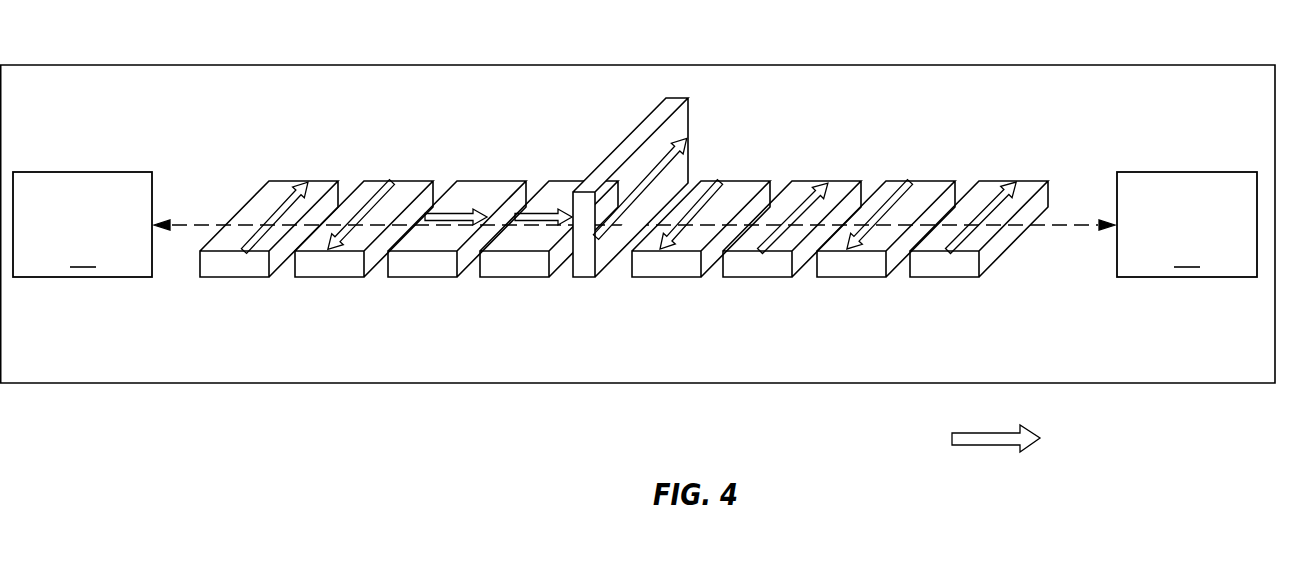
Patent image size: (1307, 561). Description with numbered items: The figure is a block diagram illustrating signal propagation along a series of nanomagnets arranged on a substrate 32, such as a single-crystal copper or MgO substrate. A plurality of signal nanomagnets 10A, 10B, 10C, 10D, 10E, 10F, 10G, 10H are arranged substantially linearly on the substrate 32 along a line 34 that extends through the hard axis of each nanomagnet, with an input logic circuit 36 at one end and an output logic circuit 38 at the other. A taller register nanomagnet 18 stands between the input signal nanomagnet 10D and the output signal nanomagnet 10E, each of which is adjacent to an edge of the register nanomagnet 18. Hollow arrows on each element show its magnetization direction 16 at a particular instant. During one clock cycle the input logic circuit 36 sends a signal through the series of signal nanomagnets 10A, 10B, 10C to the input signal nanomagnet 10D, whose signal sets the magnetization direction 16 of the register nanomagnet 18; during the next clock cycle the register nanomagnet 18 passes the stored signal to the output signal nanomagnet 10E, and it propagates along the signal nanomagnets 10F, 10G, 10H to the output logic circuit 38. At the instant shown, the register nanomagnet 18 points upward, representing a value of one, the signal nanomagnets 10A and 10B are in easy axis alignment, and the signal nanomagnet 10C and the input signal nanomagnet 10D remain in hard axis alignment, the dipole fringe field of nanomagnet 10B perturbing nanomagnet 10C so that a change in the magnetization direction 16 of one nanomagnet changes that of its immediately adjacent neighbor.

The signal nanomagnet 10A is at (321, 181).
The signal nanomagnet 10B is at (417, 181).
The signal nanomagnet 10C is at (490, 181).
The input signal nanomagnet 10D is at (516, 278).
The output signal nanomagnet 10E is at (668, 278).
The signal nanomagnet 10F is at (836, 181).
The signal nanomagnet 10G is at (928, 181).
The signal nanomagnet 10H is at (1024, 181).
The magnetization direction 16 is at (1107, 442).
The register nanomagnet 18 is at (690, 128).
The substrate 32 is at (993, 65).
The line 34 is at (217, 224).
The input logic circuit 36 is at (82, 224).
The output logic circuit 38 is at (1187, 224).